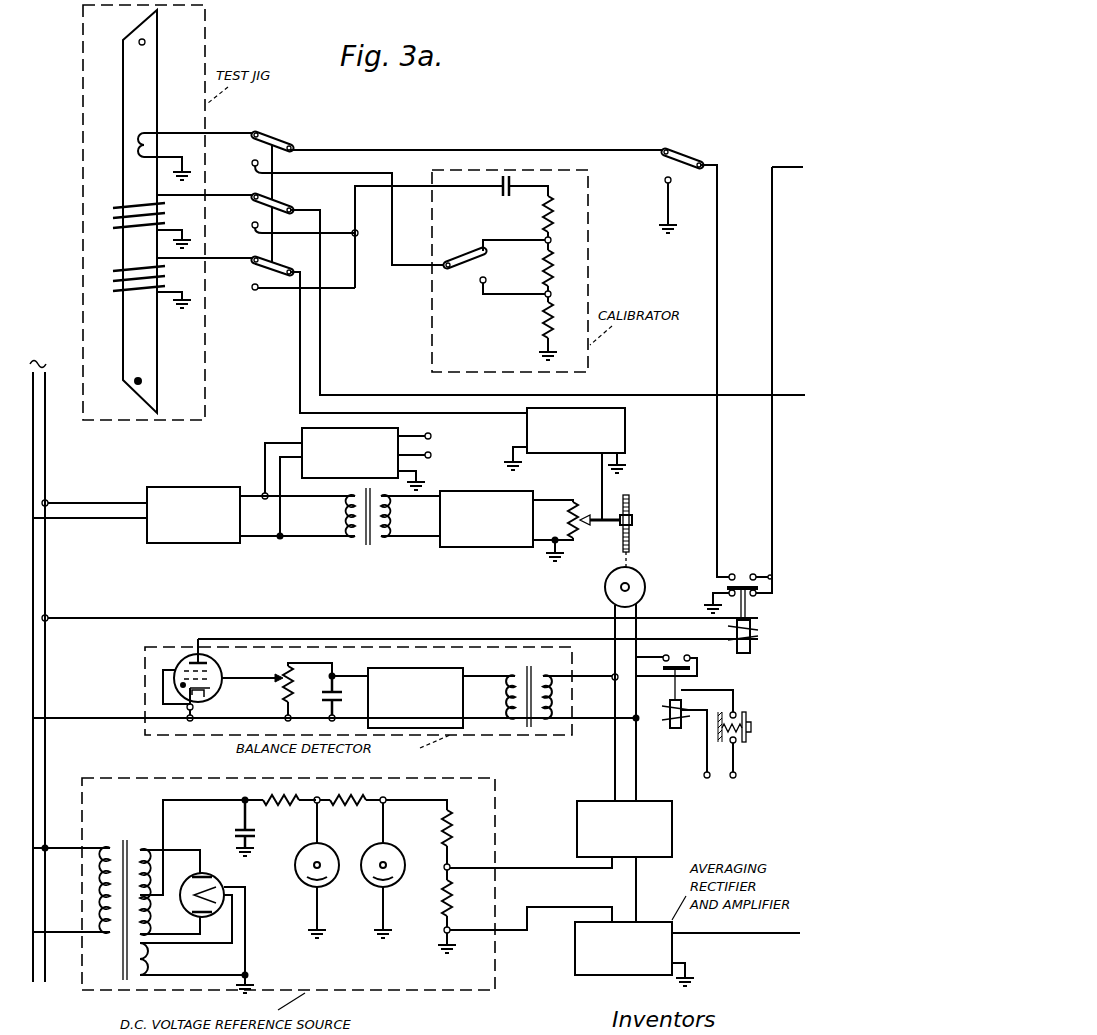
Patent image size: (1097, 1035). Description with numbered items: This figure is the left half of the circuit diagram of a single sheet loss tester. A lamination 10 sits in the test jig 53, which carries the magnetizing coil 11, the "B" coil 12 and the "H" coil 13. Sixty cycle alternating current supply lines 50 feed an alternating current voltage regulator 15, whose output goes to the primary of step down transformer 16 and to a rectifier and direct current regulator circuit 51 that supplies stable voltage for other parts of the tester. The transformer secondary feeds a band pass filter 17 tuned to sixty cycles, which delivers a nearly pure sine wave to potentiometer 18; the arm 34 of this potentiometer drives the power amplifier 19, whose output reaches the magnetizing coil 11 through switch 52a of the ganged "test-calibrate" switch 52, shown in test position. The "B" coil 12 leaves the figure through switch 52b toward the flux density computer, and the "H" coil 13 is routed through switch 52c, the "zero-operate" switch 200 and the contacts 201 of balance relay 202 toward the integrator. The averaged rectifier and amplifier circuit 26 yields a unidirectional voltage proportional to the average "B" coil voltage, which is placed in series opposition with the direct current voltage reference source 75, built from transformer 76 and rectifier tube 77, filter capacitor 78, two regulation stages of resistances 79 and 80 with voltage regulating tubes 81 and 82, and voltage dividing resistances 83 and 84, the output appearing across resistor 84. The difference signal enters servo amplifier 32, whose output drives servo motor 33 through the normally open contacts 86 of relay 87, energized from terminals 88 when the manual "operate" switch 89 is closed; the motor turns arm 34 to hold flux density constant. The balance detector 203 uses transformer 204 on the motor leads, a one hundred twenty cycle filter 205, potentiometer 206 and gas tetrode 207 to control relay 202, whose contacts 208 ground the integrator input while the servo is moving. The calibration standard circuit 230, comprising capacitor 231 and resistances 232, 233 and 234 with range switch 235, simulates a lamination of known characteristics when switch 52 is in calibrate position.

The lamination 10 is at (158, 88).
The magnetizing coil 11 is at (116, 286).
The "B" coil 12 is at (118, 213).
The "H" coil 13 is at (136, 152).
The alternating current voltage regulator 15 is at (181, 487).
The step down transformer 16 is at (357, 541).
The band pass filter 17 is at (492, 548).
The potentiometer 18 is at (568, 514).
The power amplifier 19 is at (625, 430).
The rectifier and amplifier circuit 26 is at (575, 958).
The servo amplifier 32 is at (581, 801).
The servo motor 33 is at (643, 578).
The arm of potentiometer 34 is at (601, 532).
The alternating current supply lines 50 is at (45, 455).
The rectifier and direct current regulator circuit 51 is at (302, 432).
The "test-calibrate" switch 52 is at (314, 166).
The switch of test-calibrate switch 52a is at (258, 268).
The switch of test-calibrate switch 52b is at (289, 199).
The switch of test-calibrate switch 52c is at (279, 136).
The test jig 53 is at (208, 30).
The direct current voltage reference source 75 is at (120, 777).
The transformer 76 is at (129, 843).
The rectifier tube 77 is at (215, 872).
The filter capacitor 78 is at (234, 832).
The resistance 79 is at (260, 799).
The resistance 80 is at (355, 799).
The voltage regulating tube 81 is at (327, 847).
The voltage regulating tube 82 is at (393, 847).
The voltage dividing resistance 83 is at (453, 830).
The voltage dividing resistance 84 is at (453, 895).
The normally open contacts 86 is at (685, 654).
The relay 87 is at (668, 714).
The terminals 88 is at (730, 778).
The manual "operate" switch 89 is at (736, 712).
The "zero-operate" switch 200 is at (690, 150).
The contacts of balance detector relay 201 is at (752, 573).
The balance detector relay 202 is at (752, 628).
The balance detector 203 is at (145, 690).
The transformer 204 is at (518, 673).
The 120 cycle filter 205 is at (400, 669).
The potentiometer 206 is at (283, 673).
The gas tetrode 207 is at (182, 660).
The contacts of balance relay 208 is at (760, 597).
The calibration standard circuit 230 is at (432, 308).
The capacitor 231 is at (503, 196).
The resistance 232 is at (546, 211).
The resistance 233 is at (546, 265).
The resistance 234 is at (546, 314).
The "range switch" 235 is at (470, 247).